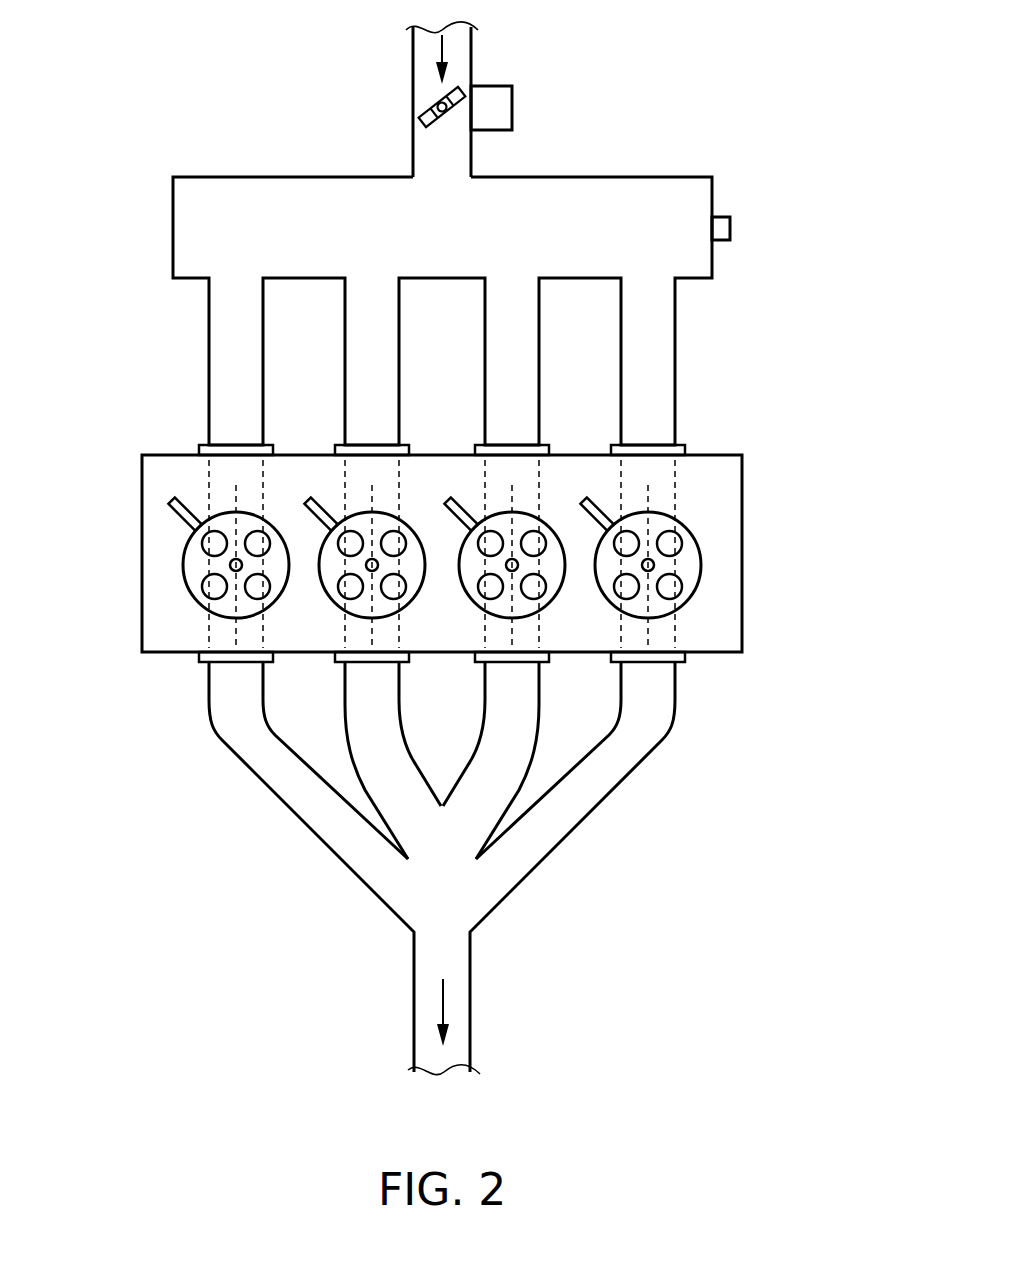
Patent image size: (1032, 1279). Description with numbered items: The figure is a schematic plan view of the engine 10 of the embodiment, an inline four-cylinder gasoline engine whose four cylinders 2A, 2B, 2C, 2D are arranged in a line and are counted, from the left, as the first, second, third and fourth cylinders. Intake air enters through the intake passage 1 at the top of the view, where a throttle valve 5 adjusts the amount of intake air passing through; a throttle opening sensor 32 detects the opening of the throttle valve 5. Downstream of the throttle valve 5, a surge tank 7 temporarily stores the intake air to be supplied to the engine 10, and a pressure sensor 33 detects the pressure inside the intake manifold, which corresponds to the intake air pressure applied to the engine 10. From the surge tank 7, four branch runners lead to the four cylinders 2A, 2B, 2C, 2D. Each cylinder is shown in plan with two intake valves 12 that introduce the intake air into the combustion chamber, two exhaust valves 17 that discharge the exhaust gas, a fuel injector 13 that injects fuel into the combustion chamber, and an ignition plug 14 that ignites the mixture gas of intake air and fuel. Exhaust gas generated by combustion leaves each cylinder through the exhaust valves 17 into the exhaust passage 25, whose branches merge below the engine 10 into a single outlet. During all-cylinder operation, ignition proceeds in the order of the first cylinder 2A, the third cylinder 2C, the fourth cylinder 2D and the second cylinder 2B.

The intake passage 1 is at (628, 126).
The throttle valve 5 is at (428, 116).
The surge tank 7 is at (216, 177).
The engine 10 is at (772, 478).
The intake valve 12 is at (214, 530).
The fuel injector 13 is at (170, 500).
The ignition plug 14 is at (232, 562).
The exhaust valve 17 is at (260, 600).
The cylinder 2A is at (203, 558).
The cylinder 2B is at (416, 598).
The cylinder 2C is at (556, 598).
The cylinder 2D is at (692, 598).
The exhaust passage 25 is at (606, 853).
The throttle opening sensor 32 is at (513, 98).
The pressure sensor 33 is at (731, 224).